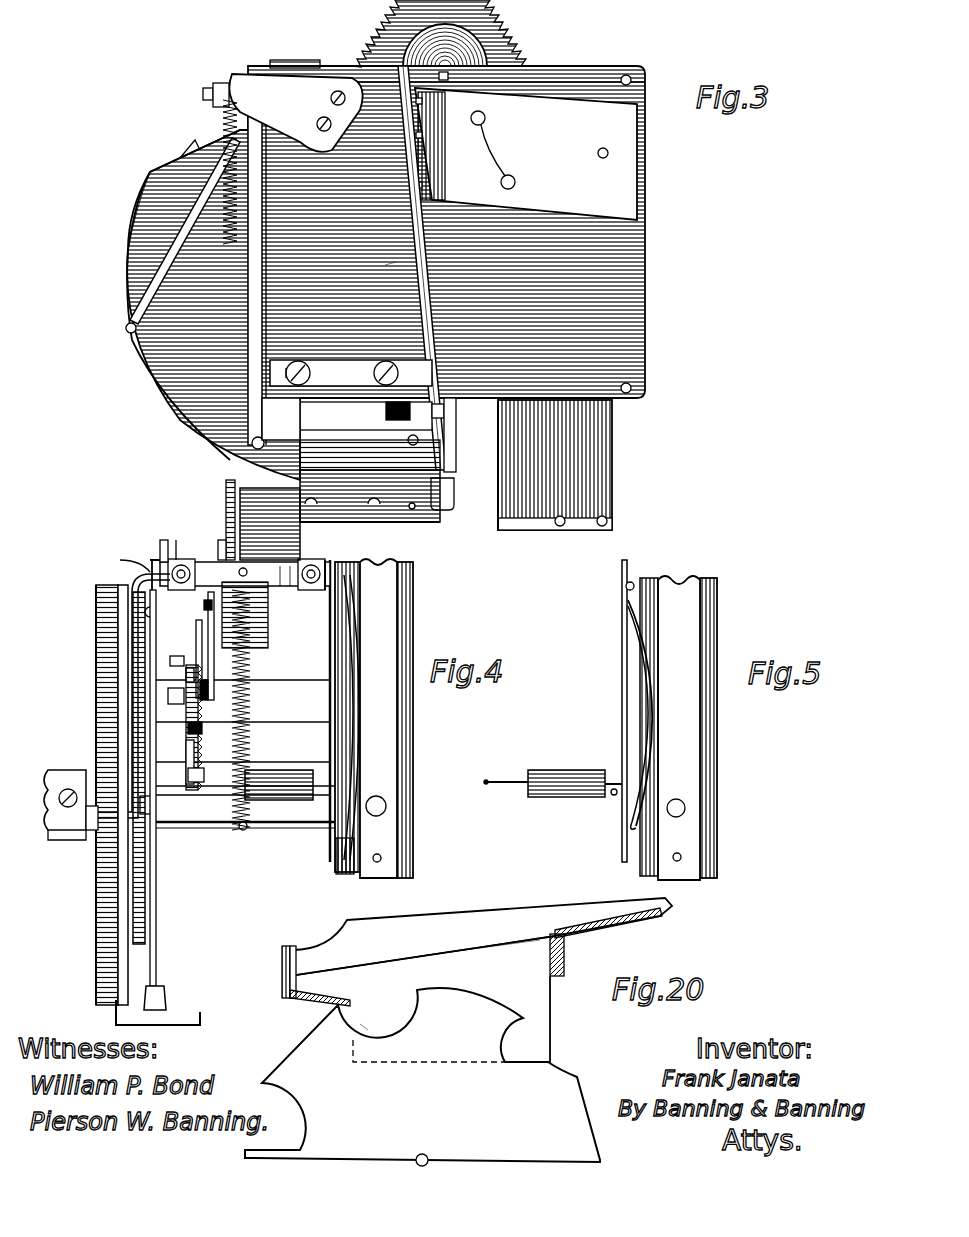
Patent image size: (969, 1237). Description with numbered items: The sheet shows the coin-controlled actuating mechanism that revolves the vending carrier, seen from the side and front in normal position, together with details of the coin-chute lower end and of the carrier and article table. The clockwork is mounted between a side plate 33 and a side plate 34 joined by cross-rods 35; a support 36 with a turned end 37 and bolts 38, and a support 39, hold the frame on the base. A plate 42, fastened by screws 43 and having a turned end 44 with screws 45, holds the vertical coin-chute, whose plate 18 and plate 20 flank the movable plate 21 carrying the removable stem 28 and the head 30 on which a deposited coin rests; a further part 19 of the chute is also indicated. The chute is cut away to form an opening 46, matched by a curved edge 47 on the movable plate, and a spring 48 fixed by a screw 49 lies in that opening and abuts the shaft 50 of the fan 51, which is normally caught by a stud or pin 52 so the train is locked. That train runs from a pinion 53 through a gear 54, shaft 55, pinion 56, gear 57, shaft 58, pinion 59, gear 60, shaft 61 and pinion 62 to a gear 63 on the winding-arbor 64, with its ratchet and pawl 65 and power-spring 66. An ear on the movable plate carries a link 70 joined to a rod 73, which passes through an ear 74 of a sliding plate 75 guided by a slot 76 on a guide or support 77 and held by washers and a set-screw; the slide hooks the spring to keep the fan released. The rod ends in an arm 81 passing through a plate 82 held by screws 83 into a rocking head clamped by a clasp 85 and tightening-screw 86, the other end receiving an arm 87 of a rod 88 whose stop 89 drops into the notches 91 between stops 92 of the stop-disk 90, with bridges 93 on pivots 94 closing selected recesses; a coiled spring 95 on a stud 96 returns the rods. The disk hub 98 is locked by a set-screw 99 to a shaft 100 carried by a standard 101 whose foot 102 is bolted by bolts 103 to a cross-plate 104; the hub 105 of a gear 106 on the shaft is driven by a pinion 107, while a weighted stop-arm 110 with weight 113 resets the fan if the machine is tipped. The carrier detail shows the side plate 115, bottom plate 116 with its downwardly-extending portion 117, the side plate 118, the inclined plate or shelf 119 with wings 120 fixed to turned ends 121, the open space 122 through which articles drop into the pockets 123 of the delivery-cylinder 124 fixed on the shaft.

In FIG. 4, the plate 18 is at (404, 618).
In FIG. 5, the plate 18 is at (708, 628).
In FIG. 3, the guide rod 19 is at (424, 292).
In FIG. 3, the plate 20 is at (420, 266).
In FIG. 3, the movable plate 21 is at (396, 262).
In FIG. 4, the movable plate 21 is at (378, 718).
In FIG. 5, the movable plate 21 is at (679, 728).
In FIG. 3, the stem 28 is at (448, 410).
In FIG. 3, the head 30 is at (370, 458).
In FIG. 3, the side plate 33 is at (640, 300).
In FIG. 4, the side plate 33 is at (326, 704).
In FIG. 5, the side plate 33 is at (640, 618).
In FIG. 4, the side plate 34 is at (156, 562).
In FIG. 3, the cross-rods 35 is at (285, 62).
In FIG. 4, the cross-rods 35 is at (282, 830).
In FIG. 3, the support 36 is at (608, 432).
In FIG. 3, the turned end 37 is at (612, 522).
In FIG. 3, the bolts 38 is at (560, 516).
In FIG. 3, the support 39 is at (498, 470).
In FIG. 3, the plate 42 is at (526, 154).
In FIG. 3, the screws 43 is at (604, 176).
In FIG. 3, the turned end 44 is at (432, 165).
In FIG. 3, the screws 45 is at (428, 136).
In FIG. 5, the opening 46 is at (600, 646).
In FIG. 4, the curved edge 47 is at (243, 832).
In FIG. 5, the curved edge 47 is at (664, 720).
In FIG. 5, the spring 48 is at (662, 698).
In FIG. 5, the screw 49 is at (624, 592).
In FIG. 5, the shaft 50 is at (490, 784).
In FIG. 4, the fan 51 is at (279, 773).
In FIG. 5, the fan 51 is at (562, 772).
In FIG. 4, the stud or pin 52 is at (318, 790).
In FIG. 5, the stud or pin 52 is at (614, 796).
In FIG. 4, the pinion 53 is at (202, 784).
In FIG. 4, the gear 54 is at (196, 754).
In FIG. 4, the shaft 55 is at (177, 702).
In FIG. 4, the pinion 56 is at (204, 730).
In FIG. 4, the gear 57 is at (202, 712).
In FIG. 4, the shaft 58 is at (282, 680).
In FIG. 4, the pinion 59 is at (220, 696).
In FIG. 4, the gear 60 is at (214, 666).
In FIG. 4, the shaft 61 is at (268, 623).
In FIG. 4, the pinion 62 is at (208, 622).
In FIG. 3, the gear 63 is at (528, 50).
In FIG. 4, the gear 63 is at (222, 540).
In FIG. 3, the winding-arbor 64 is at (450, 77).
In FIG. 4, the ratchet and pawl 65 is at (226, 530).
In FIG. 3, the power-spring 66 is at (470, 38).
In FIG. 4, the power-spring 66 is at (270, 524).
In FIG. 4, the link 70 is at (346, 874).
In FIG. 3, the rod 73 is at (264, 290).
In FIG. 4, the rod 73 is at (352, 742).
In FIG. 3, the ear 74 is at (281, 419).
In FIG. 3, the sliding plate 75 is at (296, 362).
In FIG. 3, the slot 76 is at (340, 362).
In FIG. 4, the slot 76 is at (280, 566).
In FIG. 3, the guide or support 77 is at (351, 373).
In FIG. 3, the arm 81 is at (250, 88).
In FIG. 4, the arm 81 is at (314, 560).
In FIG. 3, the plate 82 is at (295, 113).
In FIG. 4, the plate 82 is at (290, 566).
In FIG. 3, the screws 83 is at (322, 118).
In FIG. 4, the clasp 85 is at (176, 558).
In FIG. 4, the tightening-screw 86 is at (164, 560).
In FIG. 4, the arm 87 is at (134, 560).
In FIG. 3, the rod 88 is at (128, 296).
In FIG. 4, the rod 88 is at (132, 660).
In FIG. 3, the stop 89 is at (126, 330).
In FIG. 4, the stop 89 is at (88, 824).
In FIG. 4, the stop-disk 90 is at (96, 752).
In FIG. 3, the notches 91 is at (170, 354).
In FIG. 4, the notches 91 is at (96, 612).
In FIG. 3, the stops 92 is at (171, 258).
In FIG. 4, the stops 92 is at (118, 640).
In FIG. 3, the bridges 93 is at (140, 220).
In FIG. 3, the pivot or pin 94 is at (150, 176).
In FIG. 3, the coiled spring 95 is at (222, 116).
In FIG. 4, the coiled spring 95 is at (250, 696).
In FIG. 4, the pin or stud 96 is at (245, 564).
In FIG. 4, the hub 98 is at (64, 790).
In FIG. 4, the set-screw 99 is at (56, 790).
In FIG. 4, the shaft 100 is at (50, 830).
In FIG. 20, the shaft 100 is at (426, 1156).
In FIG. 4, the standard 101 is at (158, 807).
In FIG. 3, the foot 102 is at (414, 508).
In FIG. 4, the foot 102 is at (172, 1010).
In FIG. 3, the bolts 103 is at (370, 496).
In FIG. 3, the cross-plate 104 is at (392, 522).
In FIG. 4, the hub 105 is at (152, 806).
In FIG. 4, the gear 106 is at (146, 920).
In FIG. 4, the pinion 107 is at (154, 612).
In FIG. 3, the stop-arm 110 is at (452, 448).
In FIG. 3, the weight 113 is at (452, 508).
In FIG. 20, the side plate 115 is at (481, 937).
In FIG. 20, the bottom plate 116 is at (608, 929).
In FIG. 20, the downwardly-extending portion 117 is at (550, 998).
In FIG. 20, the side plate 118 is at (480, 956).
In FIG. 20, the inclined plate or shelf 119 is at (312, 1000).
In FIG. 20, the flanges or wings 120 is at (290, 978).
In FIG. 20, the turned ends 121 is at (282, 964).
In FIG. 20, the open space 122 is at (422, 954).
In FIG. 20, the pockets 123 is at (406, 1060).
In FIG. 20, the delivery-cylinder 124 is at (422, 1075).